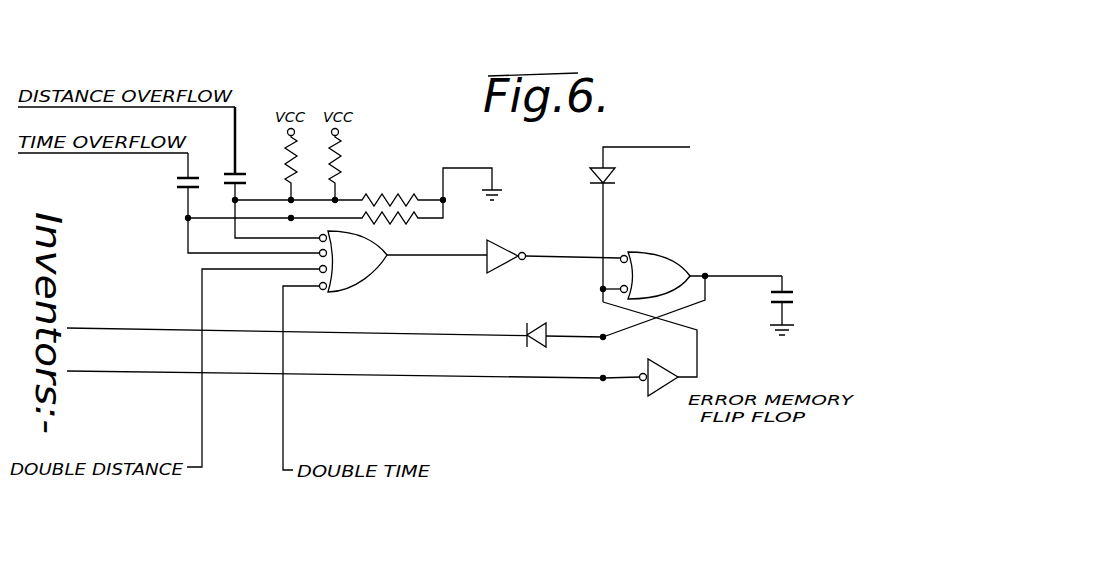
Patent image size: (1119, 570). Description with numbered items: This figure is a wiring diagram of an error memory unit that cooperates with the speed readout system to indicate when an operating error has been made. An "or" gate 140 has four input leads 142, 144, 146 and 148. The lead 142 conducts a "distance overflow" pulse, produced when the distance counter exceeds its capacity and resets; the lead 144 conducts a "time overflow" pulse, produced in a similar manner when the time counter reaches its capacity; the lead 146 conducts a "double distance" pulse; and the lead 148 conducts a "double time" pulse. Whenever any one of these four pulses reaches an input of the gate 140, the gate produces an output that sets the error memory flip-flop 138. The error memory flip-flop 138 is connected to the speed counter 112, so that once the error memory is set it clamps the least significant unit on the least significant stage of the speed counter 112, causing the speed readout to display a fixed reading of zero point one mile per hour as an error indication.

The speed counter 112 is at (835, 222).
The error memory flip-flop 138 is at (584, 292).
The or gate 140 is at (352, 278).
The input lead 142 is at (235, 234).
The input lead 144 is at (188, 249).
The input lead 146 is at (202, 280).
The input lead 148 is at (283, 301).